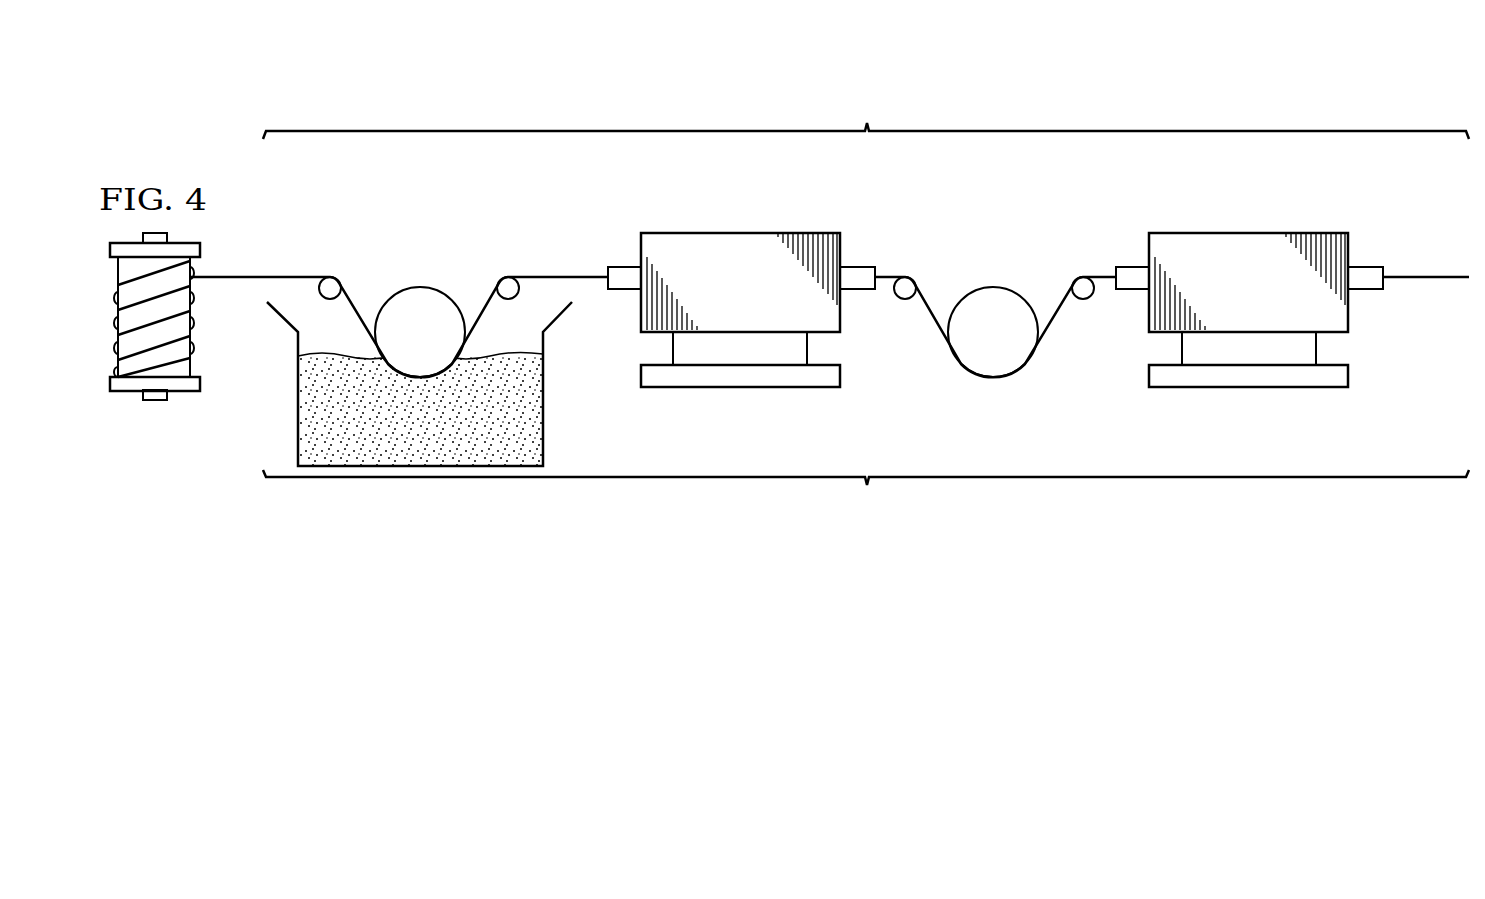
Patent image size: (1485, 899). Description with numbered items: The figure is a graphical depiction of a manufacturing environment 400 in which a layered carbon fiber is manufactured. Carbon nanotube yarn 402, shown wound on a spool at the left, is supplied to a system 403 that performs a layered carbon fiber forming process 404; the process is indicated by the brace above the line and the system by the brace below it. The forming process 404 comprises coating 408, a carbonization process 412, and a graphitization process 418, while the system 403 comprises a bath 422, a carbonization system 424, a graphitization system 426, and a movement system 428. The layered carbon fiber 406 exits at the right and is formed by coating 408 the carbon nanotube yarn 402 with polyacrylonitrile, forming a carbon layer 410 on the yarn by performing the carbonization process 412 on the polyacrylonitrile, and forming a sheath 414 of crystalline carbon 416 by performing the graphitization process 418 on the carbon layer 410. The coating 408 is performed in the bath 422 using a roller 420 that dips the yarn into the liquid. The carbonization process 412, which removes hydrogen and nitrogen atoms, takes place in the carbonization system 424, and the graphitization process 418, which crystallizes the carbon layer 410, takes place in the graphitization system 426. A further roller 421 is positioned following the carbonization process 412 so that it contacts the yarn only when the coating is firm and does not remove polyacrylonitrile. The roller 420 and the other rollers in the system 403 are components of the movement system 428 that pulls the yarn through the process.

The manufacturing environment 400 is at (1128, 72).
The carbon nanotube yarn 402 is at (154, 401).
The system 403 is at (866, 494).
The layered carbon fiber forming process 404 is at (866, 115).
The layered carbon fiber 406 is at (1425, 272).
The coating 408 is at (398, 246).
The carbon layer 410 is at (1058, 310).
The carbonization process 412 is at (740, 233).
The sheath 414 is at (1405, 292).
The crystalline carbon 416 is at (1406, 264).
The graphitization process 418 is at (1248, 233).
The roller 420 is at (430, 298).
The roller 421 is at (1003, 300).
The bath 422 is at (521, 272).
The carbonization system 424 is at (798, 209).
The graphitization system 426 is at (1305, 209).
The movement system 428 is at (322, 272).